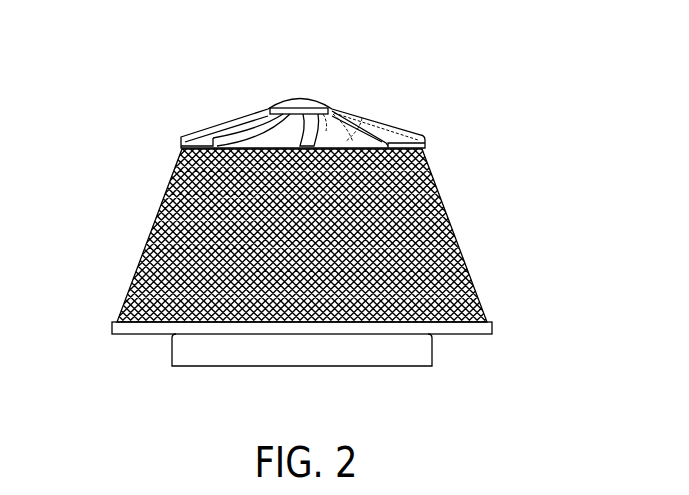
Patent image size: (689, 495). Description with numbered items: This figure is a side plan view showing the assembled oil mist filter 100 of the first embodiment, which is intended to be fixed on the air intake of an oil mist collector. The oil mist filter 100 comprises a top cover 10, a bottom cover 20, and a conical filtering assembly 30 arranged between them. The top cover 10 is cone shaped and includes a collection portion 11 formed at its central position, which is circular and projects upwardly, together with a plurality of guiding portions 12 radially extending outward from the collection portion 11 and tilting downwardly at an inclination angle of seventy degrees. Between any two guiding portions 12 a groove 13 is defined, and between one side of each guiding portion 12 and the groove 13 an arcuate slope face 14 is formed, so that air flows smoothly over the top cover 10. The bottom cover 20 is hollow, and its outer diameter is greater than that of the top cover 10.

The oil mist filter 100 is at (505, 225).
The top cover 10 is at (187, 126).
The collection portion 11 is at (289, 95).
The guiding portion 12 is at (380, 127).
The groove 13 is at (325, 128).
The arcuate slope face 14 is at (352, 128).
The bottom cover 20 is at (160, 357).
The conical filtering assembly 30 is at (148, 221).